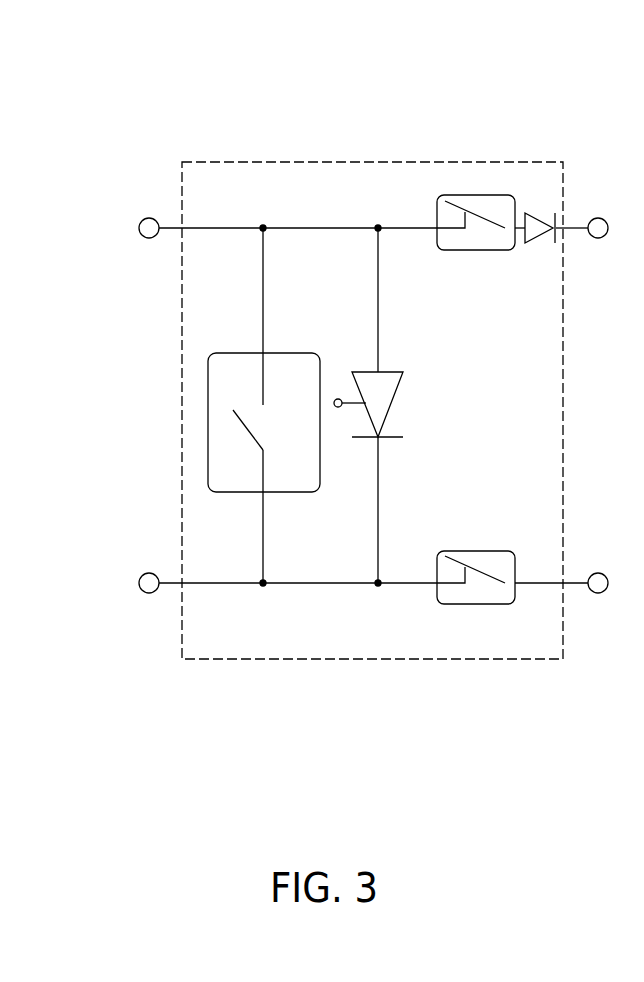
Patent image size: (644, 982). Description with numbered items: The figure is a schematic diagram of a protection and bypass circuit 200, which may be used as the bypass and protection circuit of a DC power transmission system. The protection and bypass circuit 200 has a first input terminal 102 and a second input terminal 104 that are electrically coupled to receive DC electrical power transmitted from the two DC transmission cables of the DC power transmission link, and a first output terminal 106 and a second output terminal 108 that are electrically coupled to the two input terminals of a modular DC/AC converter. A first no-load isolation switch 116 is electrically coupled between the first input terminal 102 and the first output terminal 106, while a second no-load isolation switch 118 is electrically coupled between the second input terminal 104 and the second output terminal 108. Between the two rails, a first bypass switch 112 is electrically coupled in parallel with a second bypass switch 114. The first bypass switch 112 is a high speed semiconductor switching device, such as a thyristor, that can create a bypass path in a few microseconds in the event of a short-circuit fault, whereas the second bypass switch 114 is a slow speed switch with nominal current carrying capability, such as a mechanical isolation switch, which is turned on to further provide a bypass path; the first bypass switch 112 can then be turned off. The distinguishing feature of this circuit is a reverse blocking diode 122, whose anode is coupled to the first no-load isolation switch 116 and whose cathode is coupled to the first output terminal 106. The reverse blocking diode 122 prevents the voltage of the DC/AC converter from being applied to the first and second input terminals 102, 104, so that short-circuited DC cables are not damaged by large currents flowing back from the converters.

The protection and bypass circuit 200 is at (298, 72).
The first input terminal 102 is at (149, 228).
The second input terminal 104 is at (149, 583).
The first output terminal 106 is at (598, 228).
The second output terminal 108 is at (598, 583).
The first bypass switch 112 is at (398, 400).
The second bypass switch 114 is at (208, 410).
The first no-load isolation switch 116 is at (478, 195).
The second no-load isolation switch 118 is at (478, 604).
The reverse blocking diode 122 is at (535, 242).